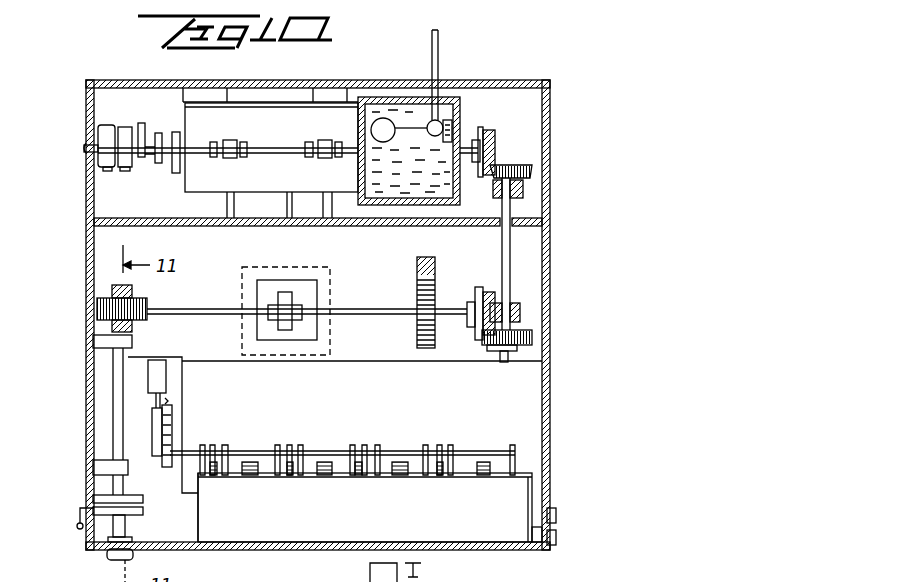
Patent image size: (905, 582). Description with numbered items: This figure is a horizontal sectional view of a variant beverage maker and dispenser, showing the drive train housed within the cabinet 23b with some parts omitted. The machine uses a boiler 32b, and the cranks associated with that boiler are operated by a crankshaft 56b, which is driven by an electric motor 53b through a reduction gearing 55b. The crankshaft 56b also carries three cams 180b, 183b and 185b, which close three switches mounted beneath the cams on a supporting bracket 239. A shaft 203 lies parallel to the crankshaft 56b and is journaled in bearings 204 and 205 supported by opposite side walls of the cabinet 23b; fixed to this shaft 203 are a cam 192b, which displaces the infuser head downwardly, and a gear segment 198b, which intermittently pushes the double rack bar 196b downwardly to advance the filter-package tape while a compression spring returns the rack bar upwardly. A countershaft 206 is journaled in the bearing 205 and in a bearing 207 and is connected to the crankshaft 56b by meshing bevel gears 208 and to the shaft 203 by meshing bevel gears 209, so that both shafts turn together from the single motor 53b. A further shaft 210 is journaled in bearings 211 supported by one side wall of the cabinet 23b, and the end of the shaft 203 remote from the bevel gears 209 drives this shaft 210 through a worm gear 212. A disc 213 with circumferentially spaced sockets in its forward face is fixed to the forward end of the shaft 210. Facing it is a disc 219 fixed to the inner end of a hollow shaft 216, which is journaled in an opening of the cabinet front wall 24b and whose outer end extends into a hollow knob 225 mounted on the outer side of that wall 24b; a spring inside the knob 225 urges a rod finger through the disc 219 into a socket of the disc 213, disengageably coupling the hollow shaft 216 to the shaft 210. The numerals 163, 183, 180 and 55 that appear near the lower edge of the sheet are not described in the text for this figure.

The cabinet 23b is at (546, 401).
The crankshaft 56b is at (265, 151).
The reduction gearing 55b is at (125, 172).
The cam 180b is at (141, 124).
The cam 183b is at (152, 157).
The supporting bracket 239 is at (152, 160).
The cam 185b is at (183, 143).
The electric motor 53b is at (98, 163).
The meshing bevel gears 208 is at (500, 163).
The bearing 207 is at (532, 198).
The countershaft 206 is at (507, 262).
The bearing 205 is at (527, 312).
The meshing bevel gears 209 is at (480, 346).
The double rack bar 196b is at (453, 251).
The gear segment 198b is at (428, 350).
The shaft 203 is at (380, 316).
The boiler 32b is at (292, 228).
The cam 192b is at (295, 298).
The bearing 204 is at (107, 313).
The worm gear 212 is at (133, 325).
The cabinet front wall 24b is at (315, 543).
The bearings 211 is at (108, 468).
The shaft 210 is at (118, 421).
The disc 213 is at (140, 498).
The disc 219 is at (106, 508).
The hollow knob 225 is at (115, 560).
The hollow shaft 216 is at (127, 528).
The support 163 is at (425, 580).
The shaft 183 is at (191, 577).
The disc 180 is at (294, 573).
The roller 55 is at (344, 577).